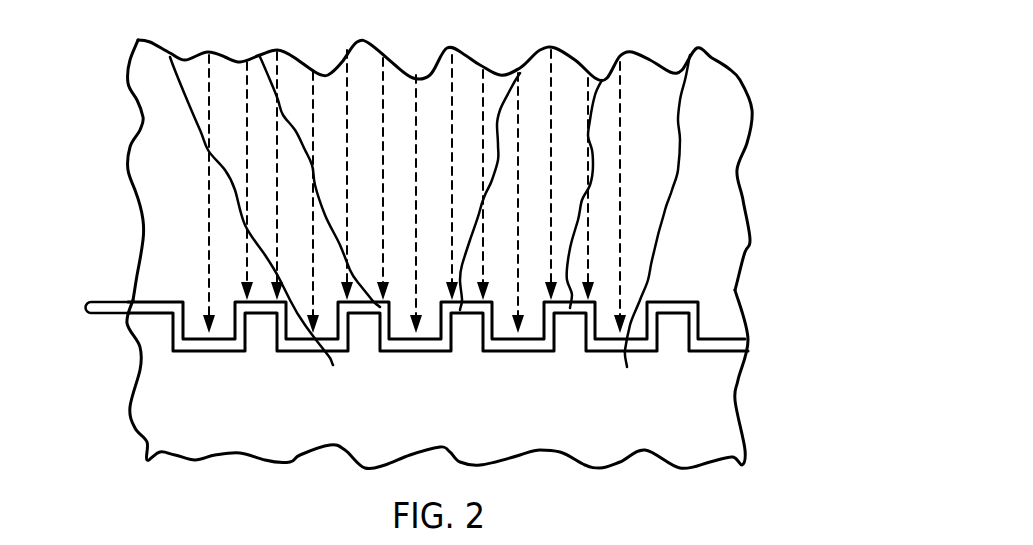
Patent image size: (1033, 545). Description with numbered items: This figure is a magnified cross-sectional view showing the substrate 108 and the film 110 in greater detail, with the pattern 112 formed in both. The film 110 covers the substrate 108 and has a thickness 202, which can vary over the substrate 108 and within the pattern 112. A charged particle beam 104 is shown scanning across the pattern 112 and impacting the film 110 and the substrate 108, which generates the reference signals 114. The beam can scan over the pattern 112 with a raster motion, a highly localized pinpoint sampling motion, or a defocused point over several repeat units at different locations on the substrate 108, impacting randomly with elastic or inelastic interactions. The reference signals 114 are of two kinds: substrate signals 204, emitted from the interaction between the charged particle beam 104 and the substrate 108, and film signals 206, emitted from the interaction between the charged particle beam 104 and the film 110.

The charged particle beam 104 is at (622, 150).
The substrate 108 is at (682, 413).
The film 110 is at (718, 345).
The pattern 112 is at (722, 318).
The reference signals 114 is at (510, 122).
The thickness 202 is at (84, 309).
The substrate signals 204 is at (680, 172).
The film signals 206 is at (600, 245).